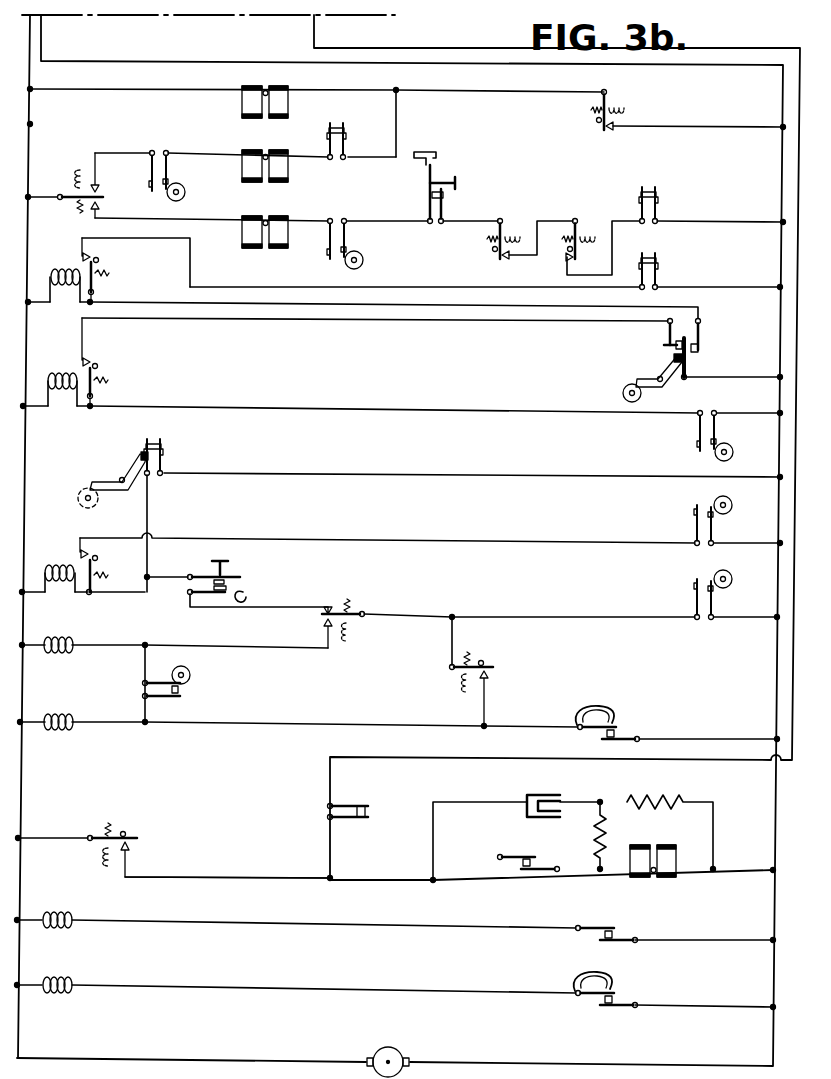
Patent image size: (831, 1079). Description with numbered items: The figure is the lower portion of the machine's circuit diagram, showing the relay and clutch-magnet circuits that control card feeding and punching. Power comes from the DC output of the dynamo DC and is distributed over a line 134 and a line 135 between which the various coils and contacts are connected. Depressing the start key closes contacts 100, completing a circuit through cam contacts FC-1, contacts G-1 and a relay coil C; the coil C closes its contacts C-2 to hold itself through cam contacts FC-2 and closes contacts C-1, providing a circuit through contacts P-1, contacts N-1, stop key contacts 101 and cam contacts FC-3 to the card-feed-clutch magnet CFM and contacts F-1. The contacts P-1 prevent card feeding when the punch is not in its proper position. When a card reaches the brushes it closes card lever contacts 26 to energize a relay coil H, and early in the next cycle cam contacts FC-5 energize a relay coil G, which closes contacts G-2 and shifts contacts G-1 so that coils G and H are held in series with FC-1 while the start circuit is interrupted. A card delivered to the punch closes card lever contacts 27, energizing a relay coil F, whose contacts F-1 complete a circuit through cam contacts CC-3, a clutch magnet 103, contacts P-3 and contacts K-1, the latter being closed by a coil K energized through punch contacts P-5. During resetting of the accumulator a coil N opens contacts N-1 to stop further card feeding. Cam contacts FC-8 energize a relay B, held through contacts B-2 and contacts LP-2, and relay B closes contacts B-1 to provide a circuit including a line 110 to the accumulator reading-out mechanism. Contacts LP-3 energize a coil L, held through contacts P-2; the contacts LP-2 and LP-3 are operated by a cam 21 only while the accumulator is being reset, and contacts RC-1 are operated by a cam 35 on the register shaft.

The line 134 is at (41, 47).
The line 110 is at (412, 44).
The line 135 is at (30, 124).
The clutch magnet 103 is at (248, 167).
The stop key contacts 101 is at (441, 211).
The start key contacts 100 is at (228, 582).
The cam 35 is at (85, 490).
The cam 21 is at (622, 393).
The card lever contacts 26 is at (624, 734).
The card lever contacts 27 is at (620, 1000).
The coil K is at (628, 108).
The contacts K-1 is at (606, 130).
The contacts P-3 is at (335, 123).
The cam contacts CC-3 is at (158, 150).
The relay coil F is at (68, 177).
The contacts F-1 is at (100, 196).
The card-feed-clutch magnet CFM is at (255, 232).
The cam contacts FC-3 is at (348, 243).
The relay coil C is at (55, 562).
The contacts C-1 is at (500, 258).
The relay coil N is at (594, 232).
The contacts N-1 is at (565, 252).
The contacts P-1 is at (658, 205).
The contacts P-2 is at (658, 268).
The coil L is at (58, 268).
The relay B is at (55, 372).
The contacts B-2 is at (88, 356).
The contacts LP-2 is at (666, 340).
The contacts LP-3 is at (700, 351).
The cam contacts FC-8 is at (700, 436).
The contacts RC-1 is at (463, 514).
The cam contacts FC-2 is at (695, 523).
The contacts C-2 is at (85, 548).
The relay coil G is at (55, 638).
The contacts G-1 is at (318, 615).
The contacts G-2 is at (493, 674).
The cam contacts FC-1 is at (695, 640).
The cam contacts FC-5 is at (186, 690).
The relay coil H is at (65, 712).
The contacts B-1 is at (140, 842).
The contacts P-5 is at (618, 934).
The dynamo DC output DC is at (380, 1057).